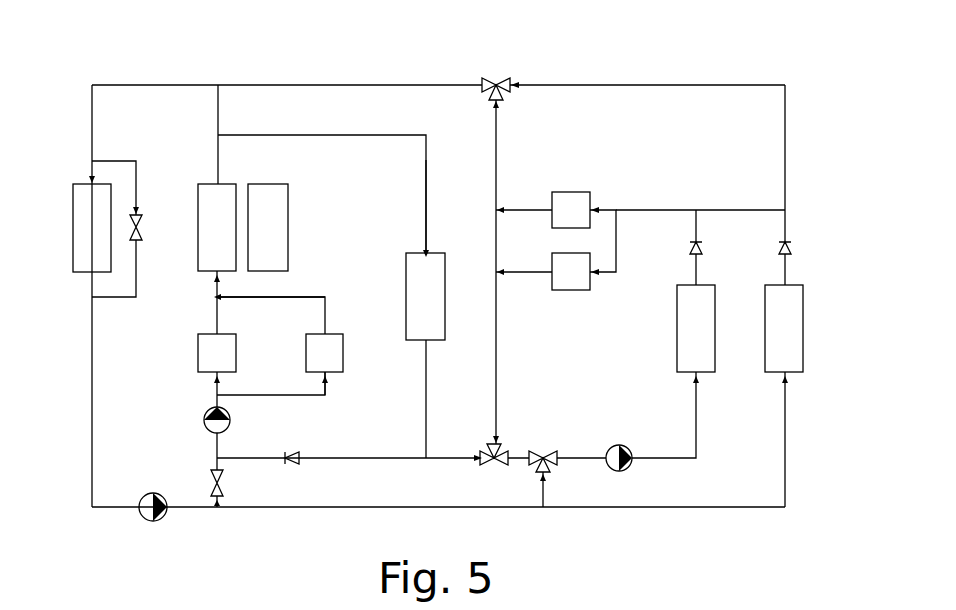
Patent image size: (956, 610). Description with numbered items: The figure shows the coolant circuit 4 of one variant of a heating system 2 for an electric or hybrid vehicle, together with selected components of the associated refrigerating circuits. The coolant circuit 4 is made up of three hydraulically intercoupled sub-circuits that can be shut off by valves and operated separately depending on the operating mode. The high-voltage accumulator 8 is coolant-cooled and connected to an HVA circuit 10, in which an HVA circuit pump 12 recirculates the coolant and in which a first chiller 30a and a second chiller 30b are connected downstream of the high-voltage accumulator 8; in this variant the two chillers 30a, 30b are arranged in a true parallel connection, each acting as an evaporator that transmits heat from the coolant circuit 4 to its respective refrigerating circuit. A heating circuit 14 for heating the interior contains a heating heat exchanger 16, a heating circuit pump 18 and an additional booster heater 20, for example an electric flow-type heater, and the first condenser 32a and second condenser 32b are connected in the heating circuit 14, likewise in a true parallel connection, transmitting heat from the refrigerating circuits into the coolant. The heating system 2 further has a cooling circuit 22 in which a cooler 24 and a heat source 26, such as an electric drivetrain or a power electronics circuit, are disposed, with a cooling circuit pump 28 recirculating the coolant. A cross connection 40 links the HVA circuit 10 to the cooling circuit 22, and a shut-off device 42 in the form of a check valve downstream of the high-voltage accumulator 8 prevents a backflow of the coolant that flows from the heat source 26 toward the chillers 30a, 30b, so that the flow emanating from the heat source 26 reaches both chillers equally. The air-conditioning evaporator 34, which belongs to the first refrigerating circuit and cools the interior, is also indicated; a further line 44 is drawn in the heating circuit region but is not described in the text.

The heating system 2 is at (118, 53).
The coolant circuit 4 is at (155, 79).
The high-voltage accumulator 8 is at (696, 328).
The HVA circuit 10 is at (496, 233).
The HVA circuit pump 12 is at (622, 445).
The heating circuit 14 is at (426, 205).
The heating heat exchanger 16 is at (217, 227).
The heating circuit pump 18 is at (204, 415).
The booster heater 20 is at (425, 296).
The cooling circuit 22 is at (458, 85).
The cooler 24 is at (92, 228).
The heat source 26 is at (784, 334).
The cooling circuit pump 28 is at (142, 497).
The first chiller 30a is at (582, 180).
The second chiller 30b is at (576, 291).
The first condenser 32a is at (198, 352).
The second condenser 32b is at (306, 352).
The air-conditioning evaporator 34 is at (268, 227).
The cross connection 40 is at (785, 210).
The shut-off device 42 is at (690, 243).
The return line 44 is at (325, 297).